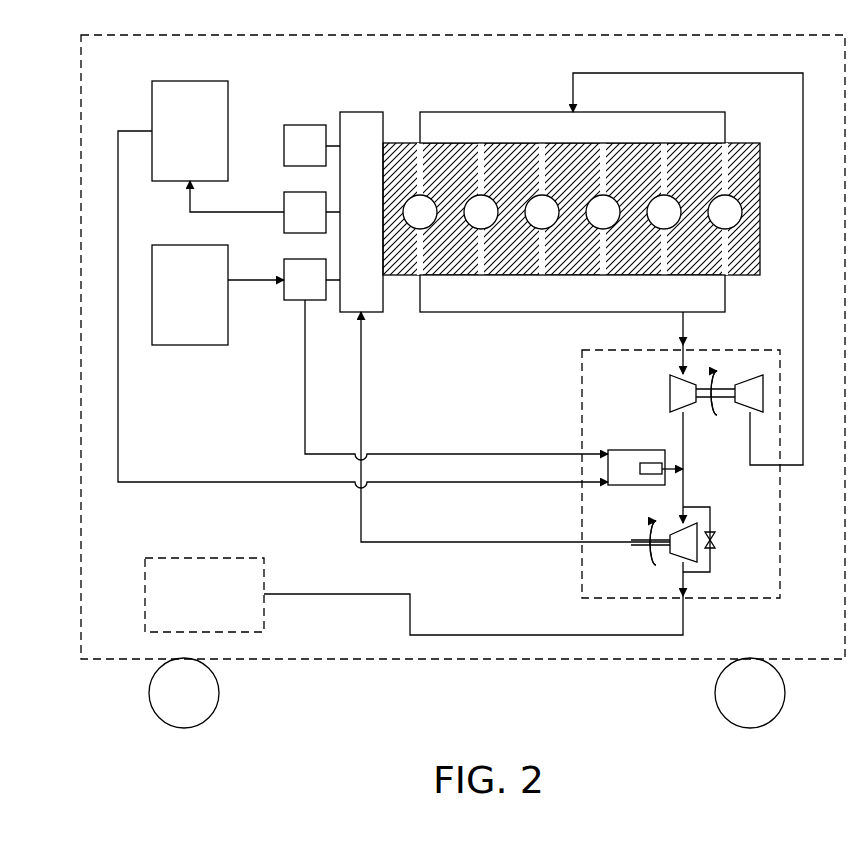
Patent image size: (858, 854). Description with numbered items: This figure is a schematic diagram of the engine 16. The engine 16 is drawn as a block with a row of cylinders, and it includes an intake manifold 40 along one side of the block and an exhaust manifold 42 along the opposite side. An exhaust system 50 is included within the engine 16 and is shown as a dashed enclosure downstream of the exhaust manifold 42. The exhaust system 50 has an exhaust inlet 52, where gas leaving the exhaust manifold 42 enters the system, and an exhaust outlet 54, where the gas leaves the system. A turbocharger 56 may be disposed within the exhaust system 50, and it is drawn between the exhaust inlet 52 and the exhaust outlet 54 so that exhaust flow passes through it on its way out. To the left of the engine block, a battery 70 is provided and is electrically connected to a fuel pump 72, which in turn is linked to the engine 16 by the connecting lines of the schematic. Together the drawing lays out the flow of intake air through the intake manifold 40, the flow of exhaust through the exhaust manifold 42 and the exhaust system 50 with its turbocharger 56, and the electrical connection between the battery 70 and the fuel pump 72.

The engine 16 is at (303, 48).
The intake manifold 40 is at (725, 130).
The exhaust manifold 42 is at (725, 290).
The exhaust system 50 is at (711, 474).
The exhaust inlet 52 is at (679, 346).
The exhaust outlet 54 is at (688, 602).
The turbocharger 56 is at (670, 393).
The battery 70 is at (190, 345).
The fuel pump 72 is at (297, 300).